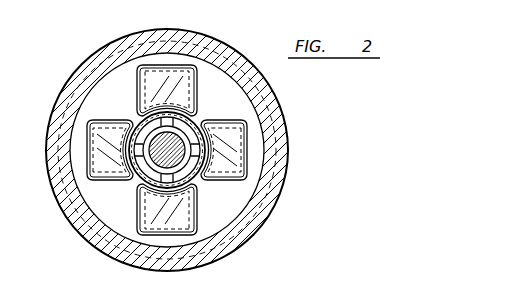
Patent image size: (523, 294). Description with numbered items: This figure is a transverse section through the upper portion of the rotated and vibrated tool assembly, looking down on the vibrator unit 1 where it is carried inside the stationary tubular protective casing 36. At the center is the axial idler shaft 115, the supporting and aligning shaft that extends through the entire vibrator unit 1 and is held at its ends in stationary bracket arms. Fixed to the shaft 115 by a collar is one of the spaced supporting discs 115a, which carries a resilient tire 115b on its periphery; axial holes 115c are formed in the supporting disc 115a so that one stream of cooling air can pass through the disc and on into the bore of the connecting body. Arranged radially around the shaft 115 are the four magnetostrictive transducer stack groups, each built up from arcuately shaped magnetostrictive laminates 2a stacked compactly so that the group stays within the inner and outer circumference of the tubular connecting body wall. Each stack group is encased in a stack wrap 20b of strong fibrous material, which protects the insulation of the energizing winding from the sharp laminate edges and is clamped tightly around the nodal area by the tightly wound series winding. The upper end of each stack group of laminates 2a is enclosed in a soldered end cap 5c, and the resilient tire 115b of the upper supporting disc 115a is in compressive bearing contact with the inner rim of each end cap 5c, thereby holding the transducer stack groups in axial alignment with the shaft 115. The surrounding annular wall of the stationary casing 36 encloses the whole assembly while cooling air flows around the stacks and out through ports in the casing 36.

The vibrator unit 1 is at (176, 80).
The end cap 5c is at (189, 86).
The stationary tubular protective casing 36 is at (292, 171).
The axial idler shaft 115 is at (183, 132).
The supporting disc 115a is at (130, 158).
The resilient tire 115b is at (136, 181).
The axial holes 115c is at (198, 181).
The stack wrap 20b is at (349, 272).
The magnetostrictive laminates 2a is at (379, 289).